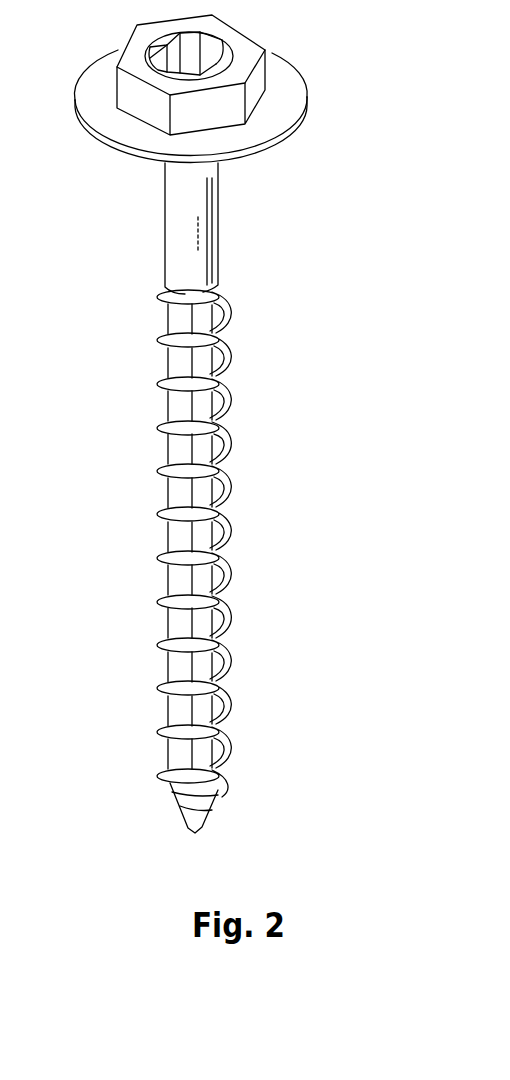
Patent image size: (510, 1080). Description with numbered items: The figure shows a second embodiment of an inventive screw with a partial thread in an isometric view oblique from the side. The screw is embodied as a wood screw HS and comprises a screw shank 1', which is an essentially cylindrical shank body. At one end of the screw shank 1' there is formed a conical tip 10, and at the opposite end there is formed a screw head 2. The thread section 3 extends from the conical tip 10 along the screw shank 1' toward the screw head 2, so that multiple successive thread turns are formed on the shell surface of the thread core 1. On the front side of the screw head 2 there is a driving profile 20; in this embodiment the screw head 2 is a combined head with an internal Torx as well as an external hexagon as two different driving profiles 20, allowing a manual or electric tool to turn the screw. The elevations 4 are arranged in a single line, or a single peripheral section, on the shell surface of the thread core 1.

The screw head 2 is at (200, 424).
The wood screw HS is at (200, 180).
The driving profile 20 is at (212, 57).
The screw shank 1' is at (228, 228).
The thread core 1 is at (189, 543).
The thread section 3 is at (227, 450).
The elevations 4 is at (177, 497).
The conical tip 10 is at (188, 802).